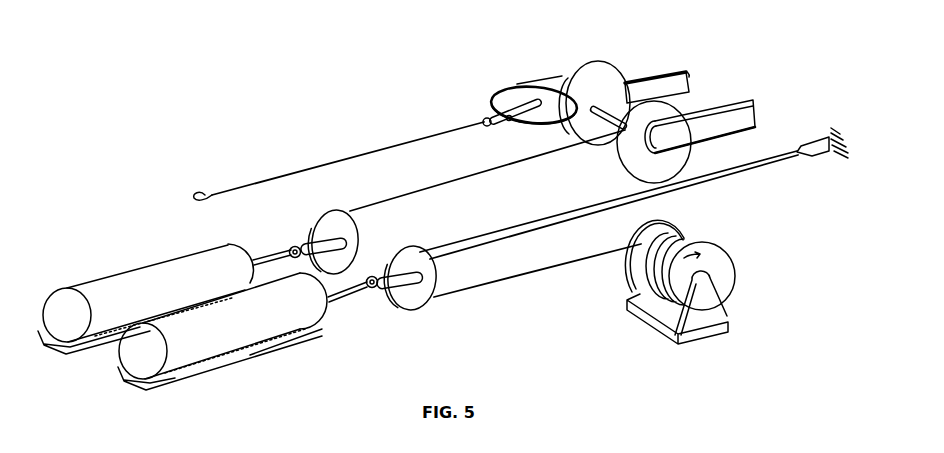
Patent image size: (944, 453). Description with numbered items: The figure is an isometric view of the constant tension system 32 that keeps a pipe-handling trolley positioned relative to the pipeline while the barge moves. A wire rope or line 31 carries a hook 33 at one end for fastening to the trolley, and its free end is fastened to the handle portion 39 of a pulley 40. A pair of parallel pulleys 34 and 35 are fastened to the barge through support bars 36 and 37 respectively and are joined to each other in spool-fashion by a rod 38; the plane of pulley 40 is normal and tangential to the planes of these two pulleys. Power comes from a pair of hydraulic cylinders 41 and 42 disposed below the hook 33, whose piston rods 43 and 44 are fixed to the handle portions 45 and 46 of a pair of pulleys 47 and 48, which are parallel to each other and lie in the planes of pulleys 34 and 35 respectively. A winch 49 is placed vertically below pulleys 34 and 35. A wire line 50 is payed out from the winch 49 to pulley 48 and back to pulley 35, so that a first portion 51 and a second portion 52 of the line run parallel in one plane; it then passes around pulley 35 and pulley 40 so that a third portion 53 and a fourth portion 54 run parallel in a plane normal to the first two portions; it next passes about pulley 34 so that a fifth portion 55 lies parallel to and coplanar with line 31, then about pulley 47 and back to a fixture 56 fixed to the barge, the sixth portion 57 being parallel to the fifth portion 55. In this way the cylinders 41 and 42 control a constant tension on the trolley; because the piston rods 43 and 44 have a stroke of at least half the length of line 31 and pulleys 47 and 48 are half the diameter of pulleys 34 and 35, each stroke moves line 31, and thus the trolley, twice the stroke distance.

The wire rope 31 is at (273, 178).
The system 32 is at (393, 126).
The hook 33 is at (198, 192).
The pulley 34 is at (625, 80).
The pulley 35 is at (673, 118).
The support bar 36 is at (688, 82).
The support bar 37 is at (730, 108).
The rod 38 is at (607, 130).
The handle portion 39 is at (484, 120).
The pulley 40 is at (517, 93).
The hydraulic cylinder 41 is at (94, 284).
The hydraulic cylinder 42 is at (167, 313).
The piston rod 43 is at (255, 263).
The piston rod 44 is at (352, 296).
The handle portion 45 is at (302, 246).
The handle portion 46 is at (370, 277).
The pulley 47 is at (330, 228).
The pulley 48 is at (406, 260).
The winch 49 is at (708, 305).
The wire line 50 is at (553, 272).
The first portion 51 is at (487, 288).
The second portion 52 is at (608, 201).
The third portion 53 is at (632, 86).
The fourth portion 54 is at (558, 72).
The fifth portion 55 is at (452, 176).
The fixture 56 is at (806, 144).
The sixth portion 57 is at (558, 216).